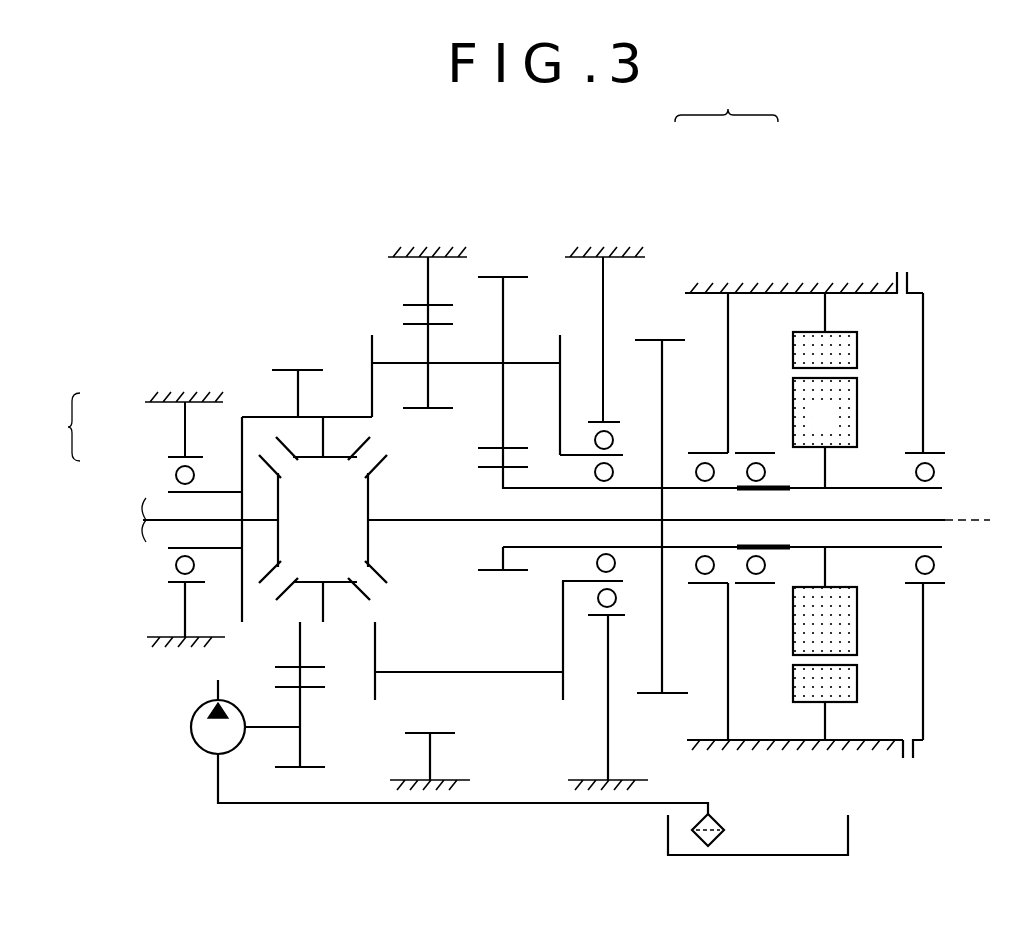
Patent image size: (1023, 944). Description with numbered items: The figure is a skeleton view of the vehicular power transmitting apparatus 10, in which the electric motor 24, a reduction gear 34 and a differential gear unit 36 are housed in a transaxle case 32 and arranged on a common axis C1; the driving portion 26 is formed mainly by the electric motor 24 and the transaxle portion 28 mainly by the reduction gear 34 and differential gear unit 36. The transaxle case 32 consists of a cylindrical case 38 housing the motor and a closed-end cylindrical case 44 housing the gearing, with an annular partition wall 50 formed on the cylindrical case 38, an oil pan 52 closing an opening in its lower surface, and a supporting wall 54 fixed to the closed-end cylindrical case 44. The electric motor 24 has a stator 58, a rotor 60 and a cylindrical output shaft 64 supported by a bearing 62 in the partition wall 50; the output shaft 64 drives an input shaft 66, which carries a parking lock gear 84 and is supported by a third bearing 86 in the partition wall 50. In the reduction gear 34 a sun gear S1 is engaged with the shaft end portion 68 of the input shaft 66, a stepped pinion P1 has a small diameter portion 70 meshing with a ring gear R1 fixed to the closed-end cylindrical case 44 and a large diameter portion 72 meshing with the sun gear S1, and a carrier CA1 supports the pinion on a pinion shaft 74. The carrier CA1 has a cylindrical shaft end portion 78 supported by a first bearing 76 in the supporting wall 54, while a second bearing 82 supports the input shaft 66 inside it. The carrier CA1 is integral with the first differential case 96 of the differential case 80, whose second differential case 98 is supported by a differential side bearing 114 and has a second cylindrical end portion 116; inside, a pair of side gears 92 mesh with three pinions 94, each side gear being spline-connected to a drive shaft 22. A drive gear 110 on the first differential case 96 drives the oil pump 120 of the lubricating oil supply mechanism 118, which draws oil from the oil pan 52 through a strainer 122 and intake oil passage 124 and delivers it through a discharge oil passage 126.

The vehicular power transmitting apparatus 10 is at (726, 101).
The drive shaft 22 is at (148, 536).
The electric motor 24 is at (866, 675).
The driving portion 26 is at (803, 197).
The transaxle portion 28 is at (648, 195).
The transaxle case 32 is at (385, 248).
The reduction gear 34 is at (513, 688).
The differential gear unit 36 is at (246, 393).
The cylindrical case 38 is at (755, 290).
The closed-end cylindrical case 44 is at (189, 398).
The partition wall 50 is at (726, 328).
The oil pan 52 is at (850, 827).
The supporting wall 54 is at (608, 723).
The stator 58 is at (852, 345).
The rotor 60 is at (852, 400).
The bearing 62 is at (755, 463).
The cylindrical output shaft 64 is at (812, 488).
The input shaft 66 is at (665, 487).
The shaft end portion 68 is at (523, 548).
The small diameter portion 70 is at (417, 410).
The large diameter portion 72 is at (490, 277).
The pinion shaft 74 is at (467, 364).
The first bearing 76 is at (614, 603).
The cylindrical shaft end portion 78 is at (573, 583).
The differential case 80 is at (56, 427).
The second bearing 82 is at (597, 563).
The parking lock gear 84 is at (651, 338).
The third bearing 86 is at (703, 572).
The side gear 92 is at (285, 511).
The pinion 94 is at (318, 460).
The first differential case 96 is at (368, 399).
The second differential case 98 is at (242, 446).
The drive gear 110 is at (318, 667).
The differential side bearing 114 is at (183, 567).
The second cylindrical end portion 116 is at (180, 489).
The lubricating oil supply mechanism 118 is at (105, 780).
The oil pump 120 is at (191, 731).
The strainer 122 is at (722, 816).
The intake oil passage 124 is at (215, 780).
The discharge oil passage 126 is at (228, 677).
The ring gear R1 is at (415, 310).
The carrier CA1 is at (371, 378).
The stepped pinion P1 is at (505, 318).
The sun gear S1 is at (500, 572).
The axis C1 is at (982, 508).